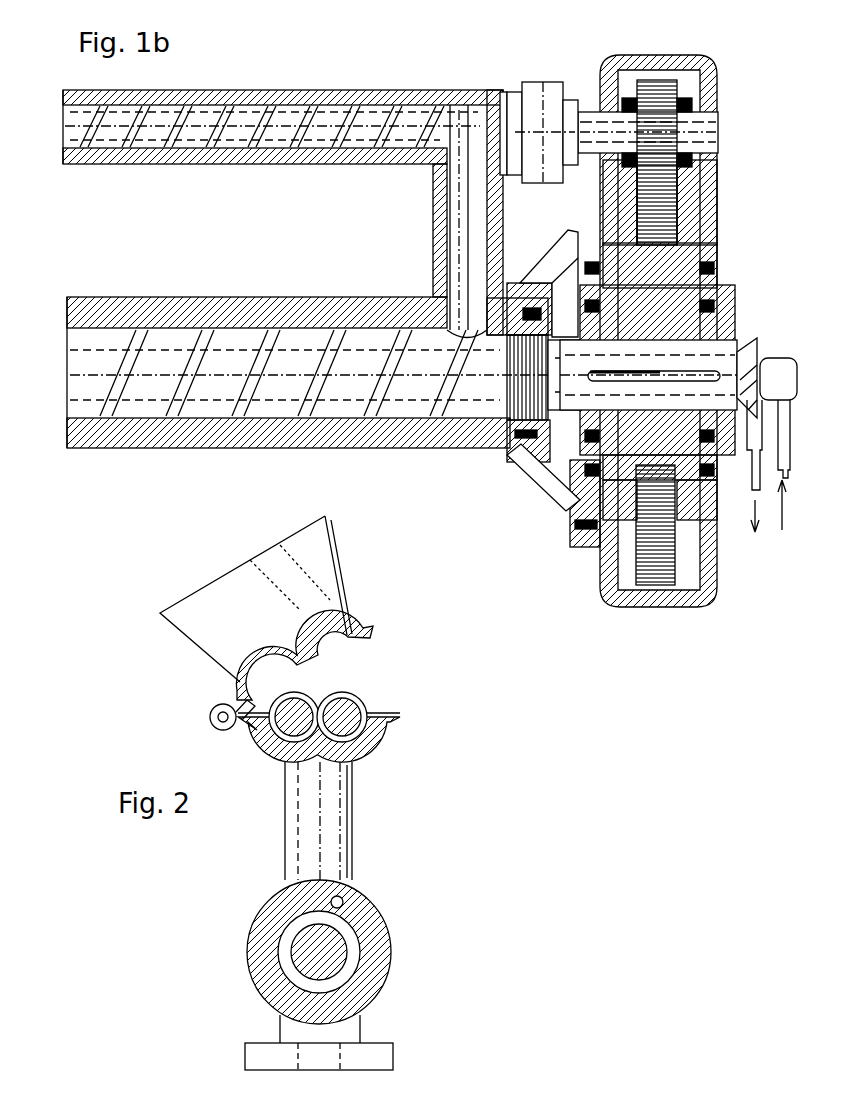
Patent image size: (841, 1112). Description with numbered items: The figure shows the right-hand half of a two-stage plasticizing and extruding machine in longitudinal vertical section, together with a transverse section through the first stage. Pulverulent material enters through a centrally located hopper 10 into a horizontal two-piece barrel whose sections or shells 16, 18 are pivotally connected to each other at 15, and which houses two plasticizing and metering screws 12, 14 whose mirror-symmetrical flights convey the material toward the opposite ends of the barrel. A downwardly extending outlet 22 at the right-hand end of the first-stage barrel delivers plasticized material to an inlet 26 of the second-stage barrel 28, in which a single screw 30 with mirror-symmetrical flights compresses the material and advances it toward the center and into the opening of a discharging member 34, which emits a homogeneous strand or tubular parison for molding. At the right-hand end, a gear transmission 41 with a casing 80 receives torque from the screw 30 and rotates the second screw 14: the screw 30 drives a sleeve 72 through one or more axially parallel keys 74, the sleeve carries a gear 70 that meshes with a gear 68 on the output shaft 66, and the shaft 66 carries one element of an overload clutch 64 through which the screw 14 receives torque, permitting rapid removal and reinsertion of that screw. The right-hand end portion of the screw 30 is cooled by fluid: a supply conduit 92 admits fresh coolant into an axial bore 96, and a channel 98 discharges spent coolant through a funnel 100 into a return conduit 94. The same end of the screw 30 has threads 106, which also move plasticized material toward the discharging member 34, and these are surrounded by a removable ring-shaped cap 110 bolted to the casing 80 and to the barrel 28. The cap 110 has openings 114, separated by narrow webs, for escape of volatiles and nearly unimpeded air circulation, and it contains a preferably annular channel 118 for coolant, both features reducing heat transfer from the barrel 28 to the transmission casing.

In FIG. 2, the hopper 10 is at (208, 598).
In FIG. 1B, the plasticizing and metering screw 12 is at (342, 120).
In FIG. 2, the plasticizing and metering screw 12 is at (343, 708).
In FIG. 2, the plasticizing and metering screw 14 is at (292, 708).
In FIG. 2, the pivotal connection 15 is at (210, 716).
In FIG. 1B, the barrel section 16 is at (272, 164).
In FIG. 2, the barrel section 16 is at (362, 740).
In FIG. 1B, the barrel section 18 is at (258, 95).
In FIG. 2, the barrel section 18 is at (326, 618).
In FIG. 1B, the outlet 22 is at (462, 160).
In FIG. 2, the outlet 22 is at (342, 775).
In FIG. 1B, the inlet 26 is at (446, 303).
In FIG. 2, the inlet 26 is at (345, 895).
In FIG. 1B, the barrel 28 is at (207, 300).
In FIG. 2, the barrel 28 is at (265, 918).
In FIG. 1B, the screw 30 is at (232, 390).
In FIG. 2, the screw 30 is at (335, 952).
In FIG. 2, the discharging member 34 is at (345, 1060).
In FIG. 1B, the gear transmission 41 is at (738, 188).
In FIG. 1B, the overload clutch 64 is at (538, 110).
In FIG. 1B, the output shaft 66 is at (708, 125).
In FIG. 1B, the gear 68 is at (645, 82).
In FIG. 1B, the gear 70 is at (677, 232).
In FIG. 1B, the sleeve 72 is at (700, 298).
In FIG. 1B, the key 74 is at (700, 370).
In FIG. 1B, the casing 80 is at (708, 535).
In FIG. 1B, the supply conduit 92 is at (776, 500).
In FIG. 1B, the return conduit 94 is at (748, 470).
In FIG. 1B, the axial bore 96 is at (765, 358).
In FIG. 1B, the channel 98 is at (652, 368).
In FIG. 1B, the funnel 100 is at (778, 379).
In FIG. 1B, the threads 106 is at (522, 400).
In FIG. 1B, the cap 110 is at (520, 455).
In FIG. 1B, the openings 114 is at (545, 260).
In FIG. 1B, the annular channel 118 is at (536, 475).